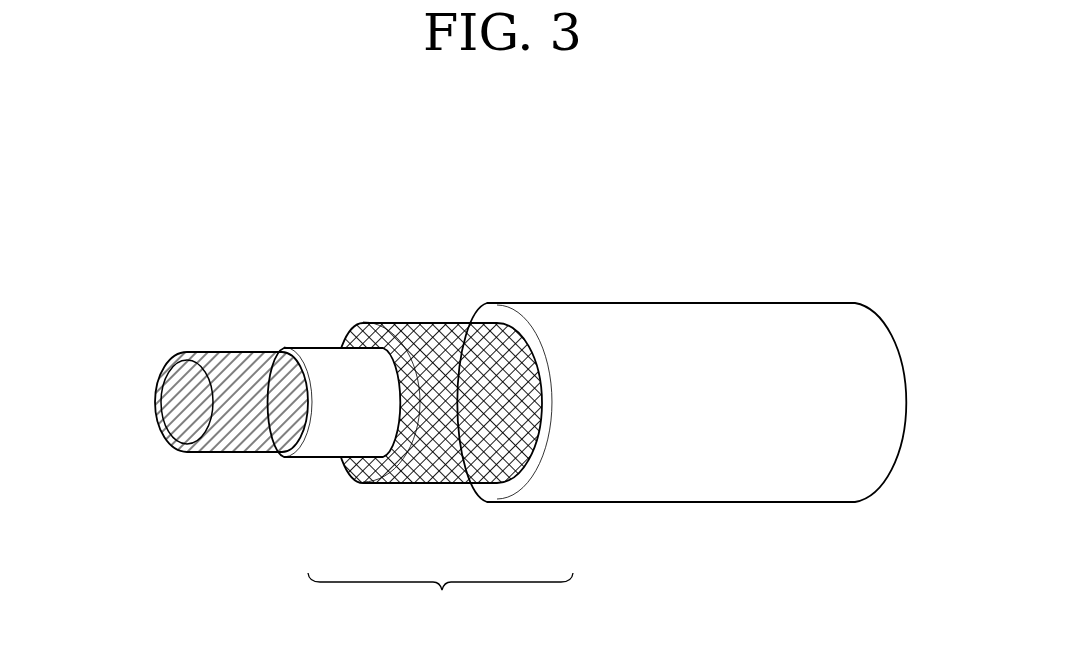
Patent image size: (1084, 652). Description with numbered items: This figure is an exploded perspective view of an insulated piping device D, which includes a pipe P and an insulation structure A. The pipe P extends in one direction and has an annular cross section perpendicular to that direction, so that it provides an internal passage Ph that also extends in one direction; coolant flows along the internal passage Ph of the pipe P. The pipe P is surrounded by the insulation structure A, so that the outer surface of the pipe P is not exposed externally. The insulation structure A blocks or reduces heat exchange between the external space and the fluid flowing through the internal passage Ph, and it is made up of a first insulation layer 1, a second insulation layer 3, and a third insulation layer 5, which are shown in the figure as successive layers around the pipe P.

The insulated piping device D is at (847, 221).
The pipe P is at (232, 440).
The internal passage Ph is at (177, 404).
The first insulation layer 1 is at (318, 448).
The second insulation layer 3 is at (428, 474).
The third insulation layer 5 is at (562, 490).
The insulation structure A is at (440, 599).